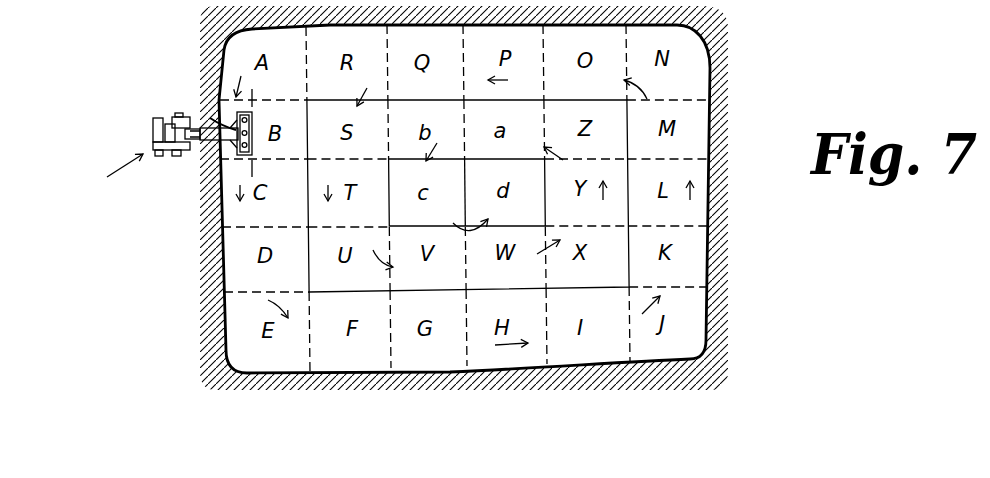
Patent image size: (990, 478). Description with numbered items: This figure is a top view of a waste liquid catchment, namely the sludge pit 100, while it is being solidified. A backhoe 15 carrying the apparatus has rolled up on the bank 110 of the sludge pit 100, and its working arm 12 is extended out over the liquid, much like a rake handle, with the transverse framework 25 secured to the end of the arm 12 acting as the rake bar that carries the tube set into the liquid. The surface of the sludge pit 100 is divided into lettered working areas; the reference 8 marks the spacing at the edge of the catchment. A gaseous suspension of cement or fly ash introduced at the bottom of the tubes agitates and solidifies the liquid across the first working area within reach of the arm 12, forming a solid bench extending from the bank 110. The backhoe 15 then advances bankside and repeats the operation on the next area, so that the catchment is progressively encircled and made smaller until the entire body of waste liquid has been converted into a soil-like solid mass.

The offset spacing 8 is at (255, 168).
The working arm 12 is at (208, 146).
The backhoe 15 is at (158, 150).
The transverse framework 25 is at (216, 120).
The sludge pit 100 is at (227, 221).
The bank 110 is at (718, 78).